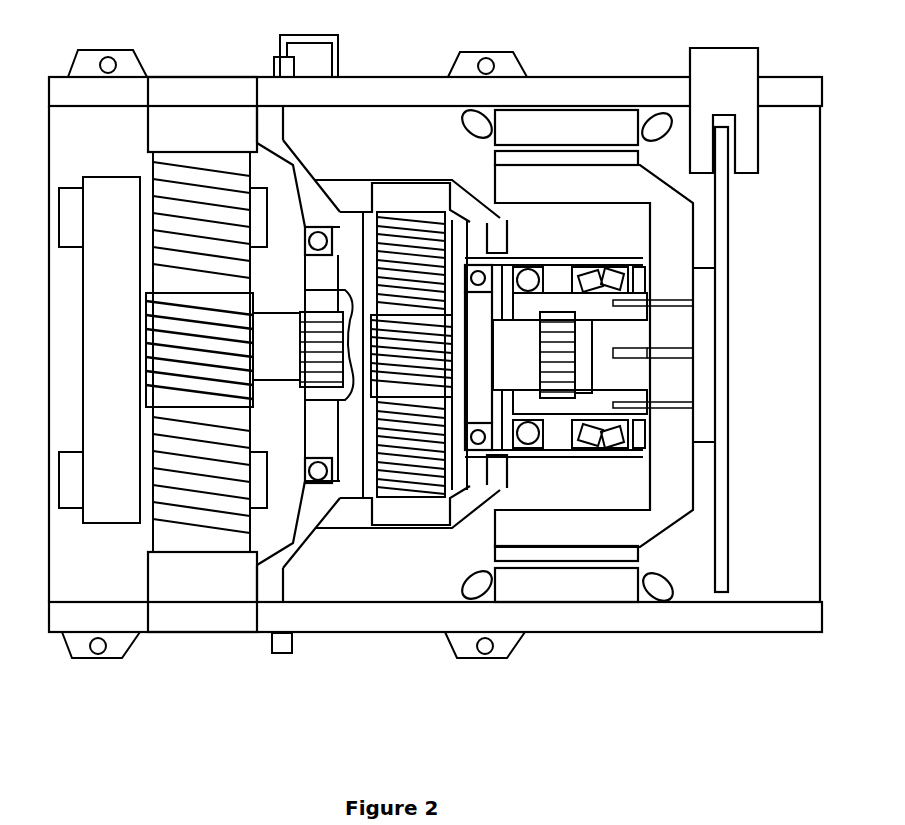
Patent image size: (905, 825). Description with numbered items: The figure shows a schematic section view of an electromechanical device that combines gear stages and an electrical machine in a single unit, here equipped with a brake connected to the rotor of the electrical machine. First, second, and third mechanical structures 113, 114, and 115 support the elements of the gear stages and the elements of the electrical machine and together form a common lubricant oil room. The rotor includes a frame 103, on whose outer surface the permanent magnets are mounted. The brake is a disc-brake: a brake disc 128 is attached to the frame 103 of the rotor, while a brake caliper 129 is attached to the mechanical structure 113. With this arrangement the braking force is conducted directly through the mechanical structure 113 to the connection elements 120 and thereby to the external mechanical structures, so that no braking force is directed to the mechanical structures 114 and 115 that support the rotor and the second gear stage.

The frame 103 is at (618, 510).
The first mechanical structure 113 is at (629, 77).
The second mechanical structure 114 is at (310, 150).
The third mechanical structure 115 is at (470, 190).
The connection elements 120 is at (138, 63).
The brake disc 128 is at (731, 207).
The brake caliper 129 is at (743, 96).